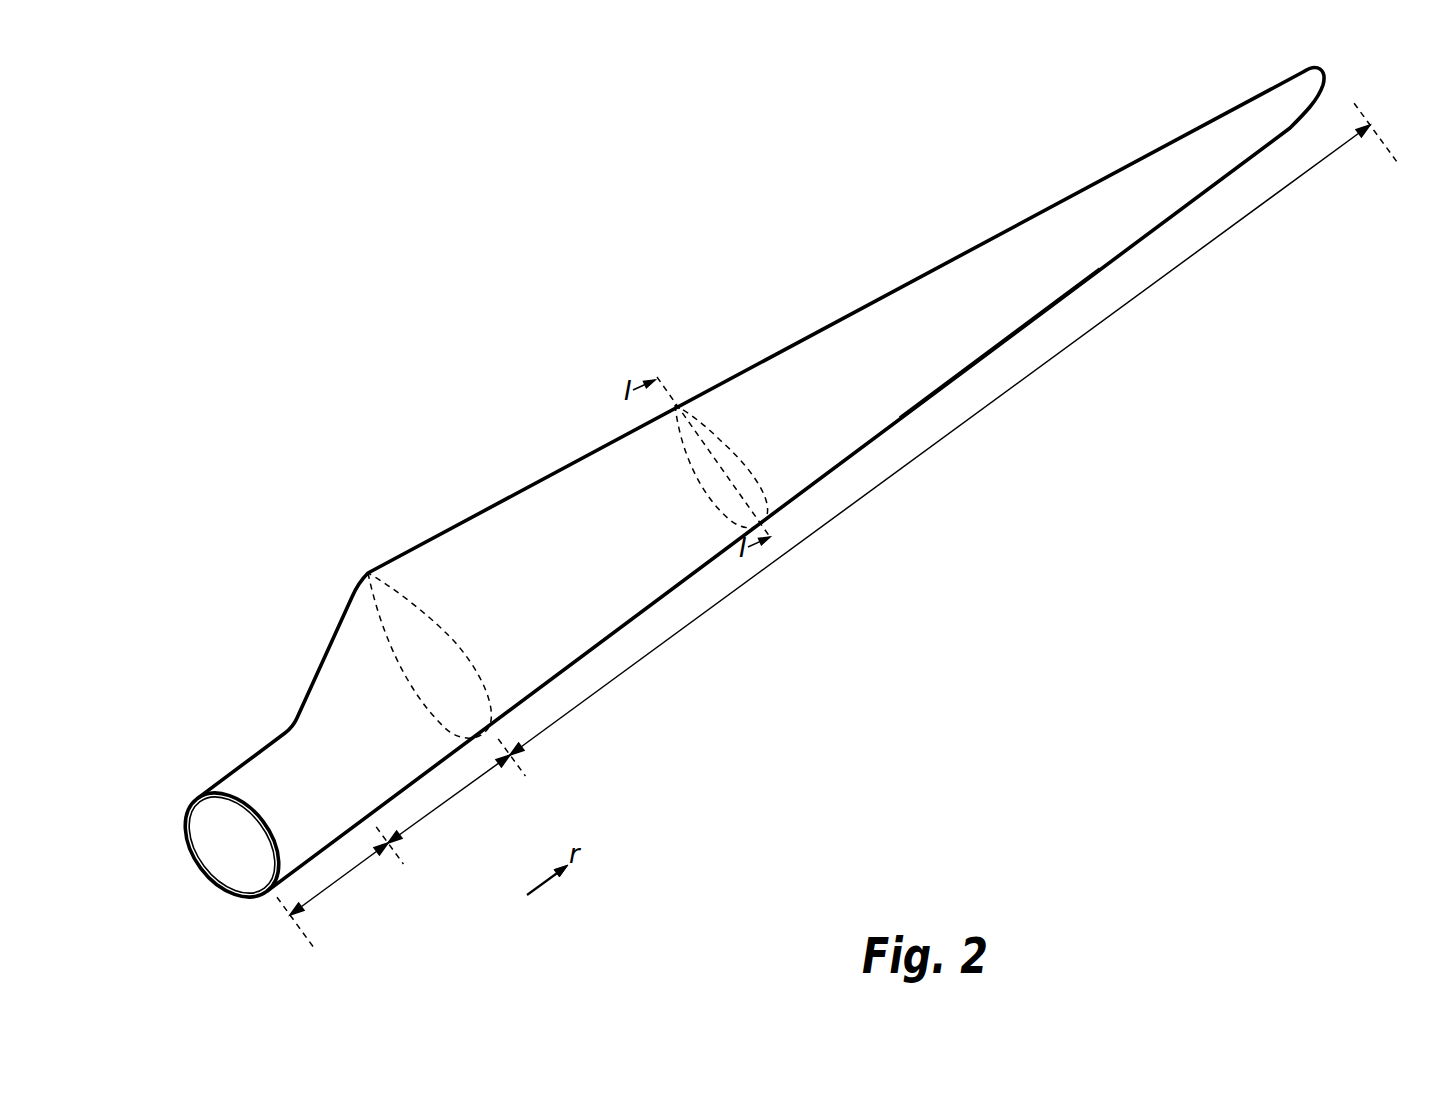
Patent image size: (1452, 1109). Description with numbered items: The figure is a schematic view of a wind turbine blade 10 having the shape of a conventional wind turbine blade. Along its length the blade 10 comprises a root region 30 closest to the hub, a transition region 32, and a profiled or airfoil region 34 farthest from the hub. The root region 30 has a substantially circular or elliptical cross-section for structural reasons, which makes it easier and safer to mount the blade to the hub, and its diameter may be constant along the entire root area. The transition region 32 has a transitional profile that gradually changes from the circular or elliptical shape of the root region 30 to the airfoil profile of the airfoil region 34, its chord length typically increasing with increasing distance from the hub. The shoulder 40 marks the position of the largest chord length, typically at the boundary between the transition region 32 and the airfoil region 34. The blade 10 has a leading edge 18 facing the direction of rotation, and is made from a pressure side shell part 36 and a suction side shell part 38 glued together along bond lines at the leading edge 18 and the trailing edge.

The wind turbine blade 10 is at (550, 327).
The leading edge 18 is at (980, 358).
The root region 30 is at (342, 877).
The transition region 32 is at (455, 797).
The airfoil region 34 is at (855, 503).
The pressure side shell part 36 is at (222, 795).
The suction side shell part 38 is at (192, 803).
The shoulder 40 is at (368, 573).